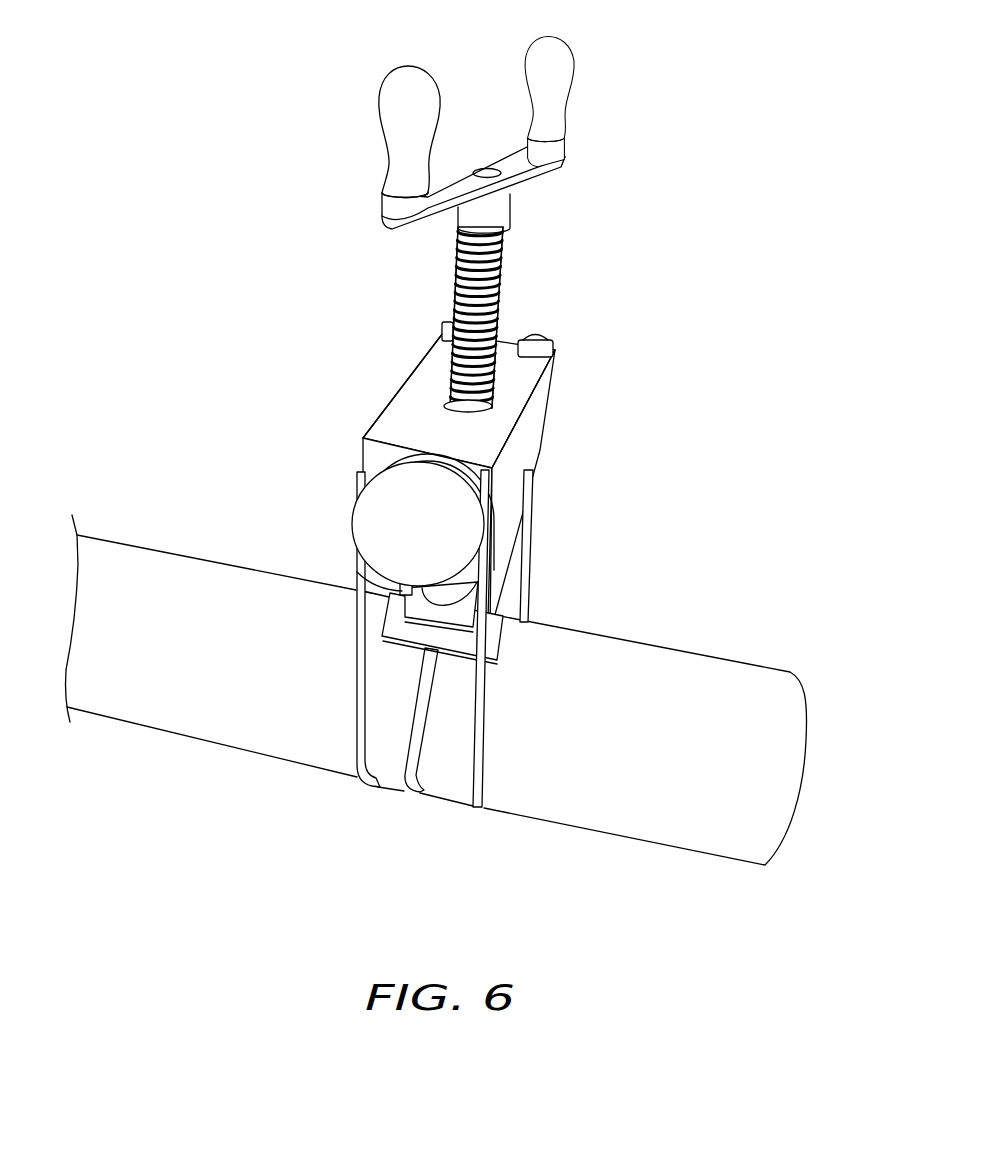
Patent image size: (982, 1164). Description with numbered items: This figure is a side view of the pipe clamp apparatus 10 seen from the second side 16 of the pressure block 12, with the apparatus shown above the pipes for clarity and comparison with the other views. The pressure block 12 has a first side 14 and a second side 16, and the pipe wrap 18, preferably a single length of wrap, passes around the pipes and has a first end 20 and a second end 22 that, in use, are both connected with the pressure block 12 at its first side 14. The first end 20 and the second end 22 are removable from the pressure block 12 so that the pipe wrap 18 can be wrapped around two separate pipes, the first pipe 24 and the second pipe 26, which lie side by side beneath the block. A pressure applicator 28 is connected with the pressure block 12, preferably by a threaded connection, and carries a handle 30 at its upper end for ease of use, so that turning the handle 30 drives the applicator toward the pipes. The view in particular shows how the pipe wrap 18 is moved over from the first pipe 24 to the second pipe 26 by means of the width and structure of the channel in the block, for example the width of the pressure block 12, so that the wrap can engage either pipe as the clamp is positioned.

The pipe clamp apparatus 10 is at (214, 351).
The pressure block 12 is at (485, 456).
The first side 14 is at (507, 344).
The second side 16 is at (396, 416).
The pipe wrap 18 is at (533, 544).
The first end 20 is at (445, 328).
The second end 22 is at (550, 342).
The first pipe 24 is at (214, 676).
The second pipe 26 is at (647, 763).
The pressure applicator 28 is at (455, 283).
The handle 30 is at (558, 58).